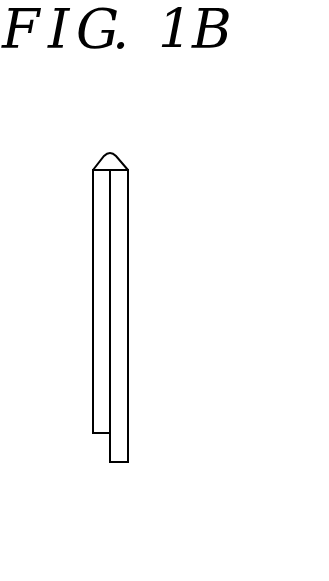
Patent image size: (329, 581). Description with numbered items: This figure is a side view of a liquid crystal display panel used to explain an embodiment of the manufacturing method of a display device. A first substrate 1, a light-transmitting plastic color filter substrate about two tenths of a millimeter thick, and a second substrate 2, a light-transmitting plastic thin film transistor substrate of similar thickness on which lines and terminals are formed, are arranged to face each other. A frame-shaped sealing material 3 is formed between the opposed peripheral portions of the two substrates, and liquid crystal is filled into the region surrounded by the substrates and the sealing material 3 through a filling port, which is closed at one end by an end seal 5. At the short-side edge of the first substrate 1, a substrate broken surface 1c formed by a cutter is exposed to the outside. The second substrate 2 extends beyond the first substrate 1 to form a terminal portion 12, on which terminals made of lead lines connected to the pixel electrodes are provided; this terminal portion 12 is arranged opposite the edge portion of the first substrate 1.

The first substrate 1 is at (93, 221).
The substrate broken surface 1c is at (102, 435).
The second substrate 2 is at (122, 268).
The sealing material 3 is at (113, 338).
The end seal 5 is at (113, 163).
The terminal portion 12 is at (119, 463).